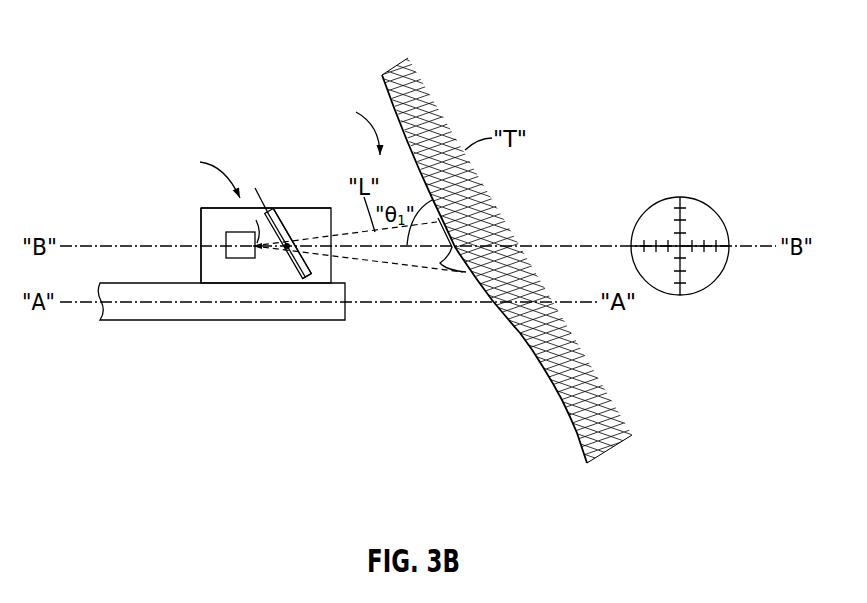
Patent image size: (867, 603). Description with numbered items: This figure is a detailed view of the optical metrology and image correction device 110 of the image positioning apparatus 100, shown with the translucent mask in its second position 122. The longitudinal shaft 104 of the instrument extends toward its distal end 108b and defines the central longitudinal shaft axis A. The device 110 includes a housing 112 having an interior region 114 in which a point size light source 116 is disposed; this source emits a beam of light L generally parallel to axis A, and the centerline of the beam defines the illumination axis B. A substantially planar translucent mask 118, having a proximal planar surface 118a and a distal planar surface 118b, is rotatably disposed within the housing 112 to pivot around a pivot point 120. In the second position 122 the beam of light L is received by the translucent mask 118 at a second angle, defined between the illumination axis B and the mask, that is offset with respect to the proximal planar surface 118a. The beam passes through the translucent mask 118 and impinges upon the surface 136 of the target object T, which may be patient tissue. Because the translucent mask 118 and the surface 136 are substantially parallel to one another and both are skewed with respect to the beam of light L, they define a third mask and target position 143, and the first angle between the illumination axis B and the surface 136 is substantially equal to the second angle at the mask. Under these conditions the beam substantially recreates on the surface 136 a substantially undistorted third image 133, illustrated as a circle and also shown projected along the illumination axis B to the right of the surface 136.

The image positioning apparatus 100 is at (227, 45).
The longitudinal shaft 104 is at (158, 320).
The distal end 108b is at (338, 332).
The optical metrology and image correction device 110 is at (307, 210).
The housing 112 is at (211, 208).
The interior region 114 is at (213, 233).
The point size light source 116 is at (225, 253).
The translucent mask 118 is at (305, 280).
The proximal planar surface 118a is at (287, 252).
The distal planar surface 118b is at (312, 273).
The pivot point 120 is at (300, 278).
The second position 122 is at (201, 174).
The third image 133 is at (445, 262).
The surface of the target object 136 is at (388, 90).
The third mask and target position 143 is at (351, 128).